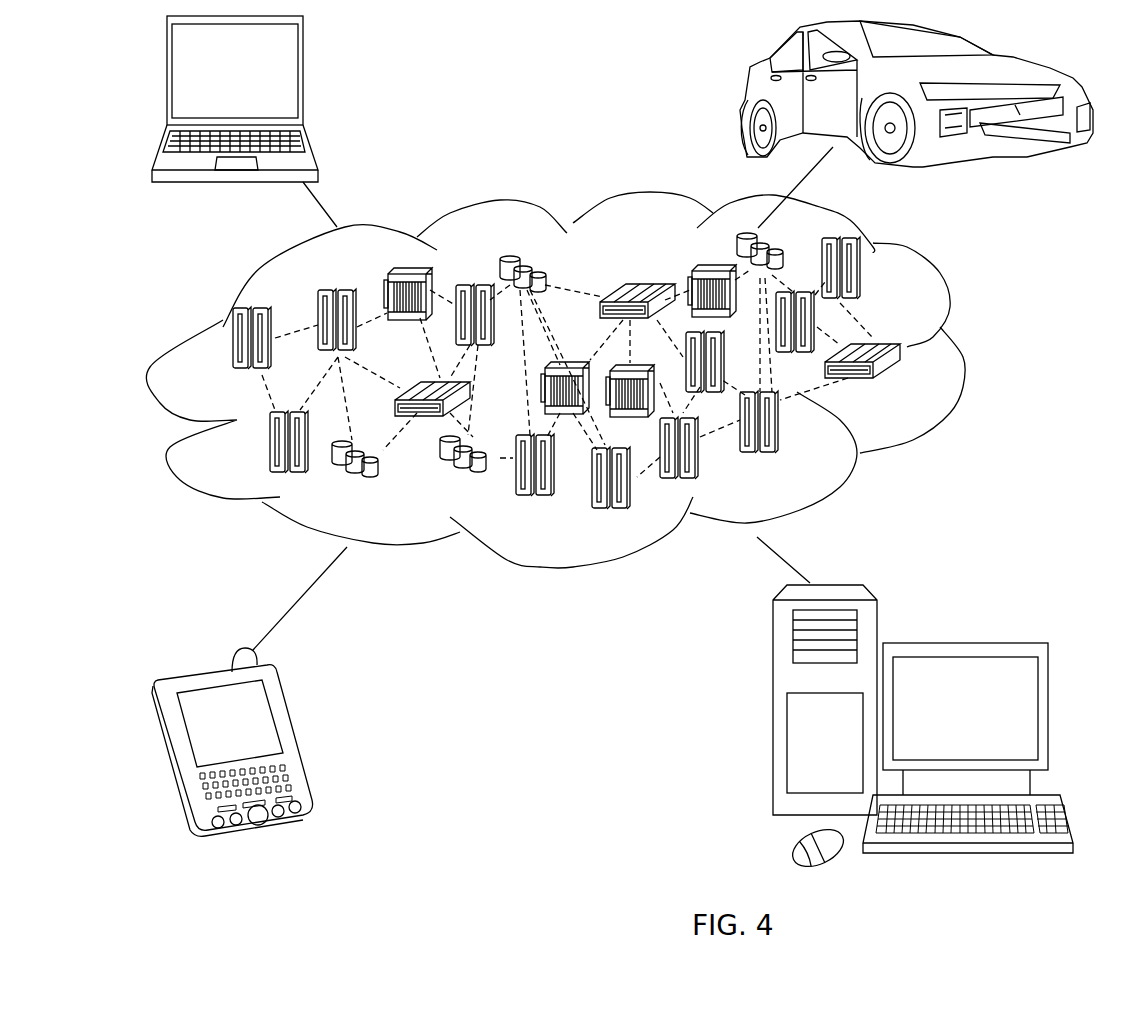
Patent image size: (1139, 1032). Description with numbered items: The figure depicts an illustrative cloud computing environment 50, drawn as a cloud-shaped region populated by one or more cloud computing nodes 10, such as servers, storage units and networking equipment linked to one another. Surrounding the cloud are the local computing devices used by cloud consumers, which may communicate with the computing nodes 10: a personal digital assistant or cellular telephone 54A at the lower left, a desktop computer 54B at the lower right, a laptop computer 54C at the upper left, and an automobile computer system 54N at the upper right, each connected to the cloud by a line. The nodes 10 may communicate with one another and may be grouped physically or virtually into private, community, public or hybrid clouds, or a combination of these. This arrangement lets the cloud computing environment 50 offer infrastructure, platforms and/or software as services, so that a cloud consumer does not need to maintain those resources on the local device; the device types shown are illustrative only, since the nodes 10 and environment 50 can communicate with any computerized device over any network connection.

The cloud computing environment 50 is at (963, 357).
The cloud computing node 10 is at (908, 383).
The personal digital assistant or cellular telephone 54A is at (293, 736).
The desktop computer 54B is at (962, 643).
The laptop computer 54C is at (303, 80).
The automobile computer system 54N is at (743, 93).